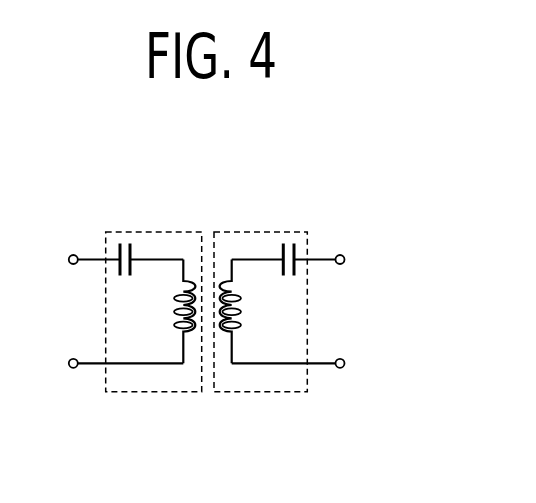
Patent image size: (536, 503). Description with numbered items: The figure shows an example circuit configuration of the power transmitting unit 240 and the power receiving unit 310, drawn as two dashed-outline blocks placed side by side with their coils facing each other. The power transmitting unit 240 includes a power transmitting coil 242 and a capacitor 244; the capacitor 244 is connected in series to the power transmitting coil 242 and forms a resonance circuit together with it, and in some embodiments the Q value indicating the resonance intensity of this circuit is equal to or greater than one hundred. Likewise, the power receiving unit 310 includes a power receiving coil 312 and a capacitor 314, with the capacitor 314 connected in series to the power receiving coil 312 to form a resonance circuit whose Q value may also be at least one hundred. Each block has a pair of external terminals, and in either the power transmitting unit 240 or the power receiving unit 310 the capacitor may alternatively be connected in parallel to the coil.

The power transmitting unit 240 is at (177, 232).
The capacitor 244 is at (135, 251).
The power transmitting coil 242 is at (174, 327).
The power receiving unit 310 is at (238, 232).
The capacitor 314 is at (282, 251).
The power receiving coil 312 is at (241, 327).